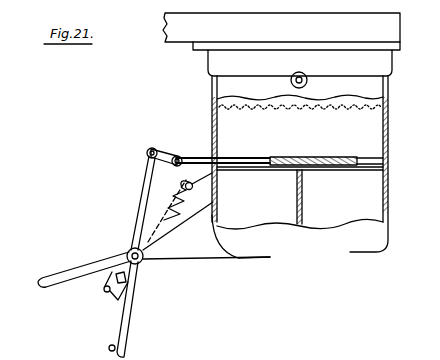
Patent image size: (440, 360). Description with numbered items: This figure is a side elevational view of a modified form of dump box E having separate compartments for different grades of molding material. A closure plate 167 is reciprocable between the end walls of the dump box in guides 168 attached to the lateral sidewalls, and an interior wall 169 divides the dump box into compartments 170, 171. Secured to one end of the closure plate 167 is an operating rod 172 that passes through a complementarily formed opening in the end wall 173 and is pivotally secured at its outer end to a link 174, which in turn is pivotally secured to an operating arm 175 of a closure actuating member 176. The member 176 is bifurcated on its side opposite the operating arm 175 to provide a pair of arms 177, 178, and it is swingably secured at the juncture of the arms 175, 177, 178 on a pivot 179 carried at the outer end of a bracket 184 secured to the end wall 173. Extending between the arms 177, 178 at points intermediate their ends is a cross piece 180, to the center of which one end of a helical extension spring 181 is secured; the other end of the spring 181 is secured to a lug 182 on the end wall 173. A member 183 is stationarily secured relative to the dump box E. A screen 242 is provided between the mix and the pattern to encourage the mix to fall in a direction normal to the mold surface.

The dump box E is at (206, 110).
The bracket 184 is at (306, 78).
The screen 242 is at (304, 104).
The operating rod 172 is at (241, 158).
The closure plate 167 is at (305, 157).
The guides 168 is at (358, 157).
The interior wall 169 is at (297, 197).
The compartment 170 is at (249, 212).
The compartment 171 is at (357, 209).
The end wall 173 is at (216, 206).
The link 174 is at (170, 152).
The operating arm 175 is at (137, 204).
The closure actuating member 176 is at (126, 251).
The arm 177 is at (55, 273).
The arm 178 is at (128, 343).
The pivot 179 is at (205, 230).
The cross piece 180 is at (98, 285).
The helical extension spring 181 is at (169, 202).
The lug 182 is at (195, 194).
The member 183 is at (108, 348).